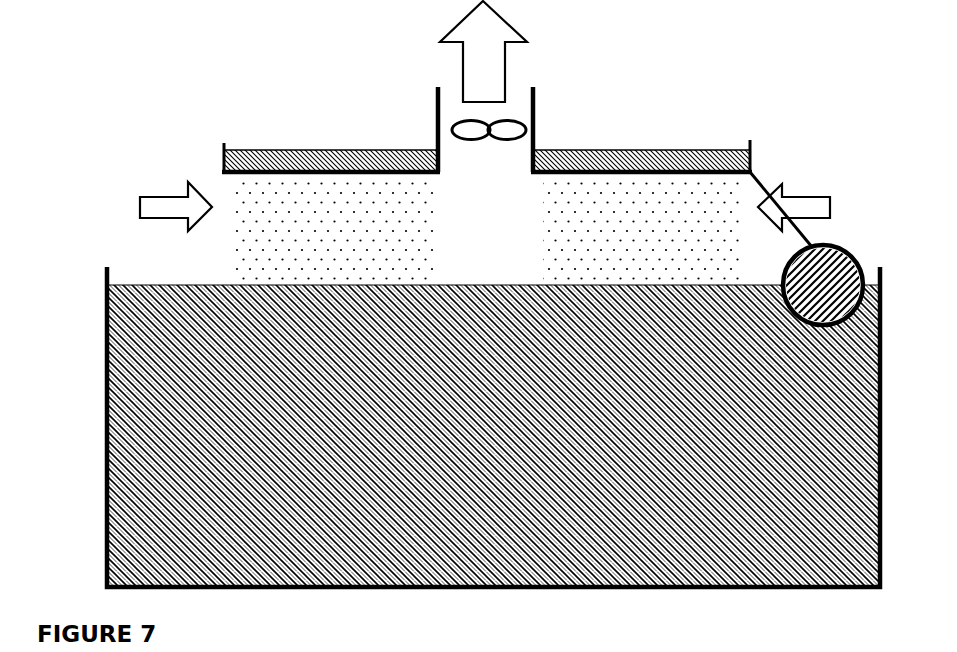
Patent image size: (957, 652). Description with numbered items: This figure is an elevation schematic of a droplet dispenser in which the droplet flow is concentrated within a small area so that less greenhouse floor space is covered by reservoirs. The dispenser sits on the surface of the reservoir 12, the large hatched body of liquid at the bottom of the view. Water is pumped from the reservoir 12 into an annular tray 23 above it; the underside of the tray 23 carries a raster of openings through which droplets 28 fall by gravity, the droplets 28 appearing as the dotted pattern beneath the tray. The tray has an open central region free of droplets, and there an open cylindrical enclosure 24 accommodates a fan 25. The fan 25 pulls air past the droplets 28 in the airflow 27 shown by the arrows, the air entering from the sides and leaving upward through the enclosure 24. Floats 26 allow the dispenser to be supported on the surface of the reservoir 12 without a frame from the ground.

The reservoir 12 is at (126, 333).
The annular tray 23 is at (641, 129).
The open cylindrical enclosure 24 is at (331, 129).
The fan 25 is at (489, 149).
The floats 26 is at (806, 248).
The airflow 27 is at (176, 198).
The droplets 28 is at (487, 231).